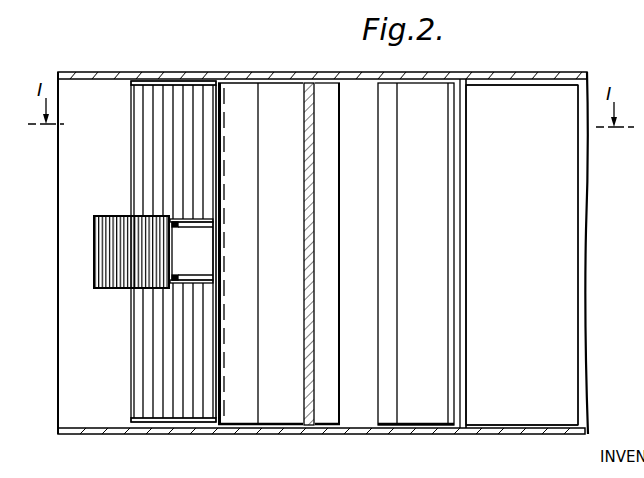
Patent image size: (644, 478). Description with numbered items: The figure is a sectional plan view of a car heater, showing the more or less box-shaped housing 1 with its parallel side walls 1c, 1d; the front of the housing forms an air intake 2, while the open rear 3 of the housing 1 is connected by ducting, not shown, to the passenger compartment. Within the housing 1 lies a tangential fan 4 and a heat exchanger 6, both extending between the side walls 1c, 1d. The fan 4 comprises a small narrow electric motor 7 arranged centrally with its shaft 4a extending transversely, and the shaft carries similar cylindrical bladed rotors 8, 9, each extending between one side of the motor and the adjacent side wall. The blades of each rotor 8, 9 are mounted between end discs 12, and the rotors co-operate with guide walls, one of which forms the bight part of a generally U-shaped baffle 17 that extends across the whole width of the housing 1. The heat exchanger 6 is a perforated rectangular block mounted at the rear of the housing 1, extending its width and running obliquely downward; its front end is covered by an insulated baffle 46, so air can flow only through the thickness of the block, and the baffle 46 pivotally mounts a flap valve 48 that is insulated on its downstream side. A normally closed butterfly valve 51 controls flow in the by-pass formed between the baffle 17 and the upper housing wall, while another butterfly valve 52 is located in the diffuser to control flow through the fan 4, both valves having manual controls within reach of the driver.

The housing 1 is at (134, 70).
The side wall 1c is at (425, 79).
The side wall 1d is at (337, 434).
The air intake 2 is at (101, 173).
The open rear 3 is at (583, 317).
The tangential fan 4 is at (122, 298).
The shaft 4a is at (172, 278).
The heat exchanger 6 is at (436, 432).
The electric motor 7 is at (200, 240).
The bladed rotor 8 is at (222, 84).
The bladed rotor 9 is at (164, 410).
The end discs 12 is at (196, 105).
The baffle 17 is at (252, 98).
The insulated baffle 46 is at (380, 201).
The flap valve 48 is at (560, 233).
The butterfly valve 51 is at (313, 150).
The butterfly valve 52 is at (330, 252).